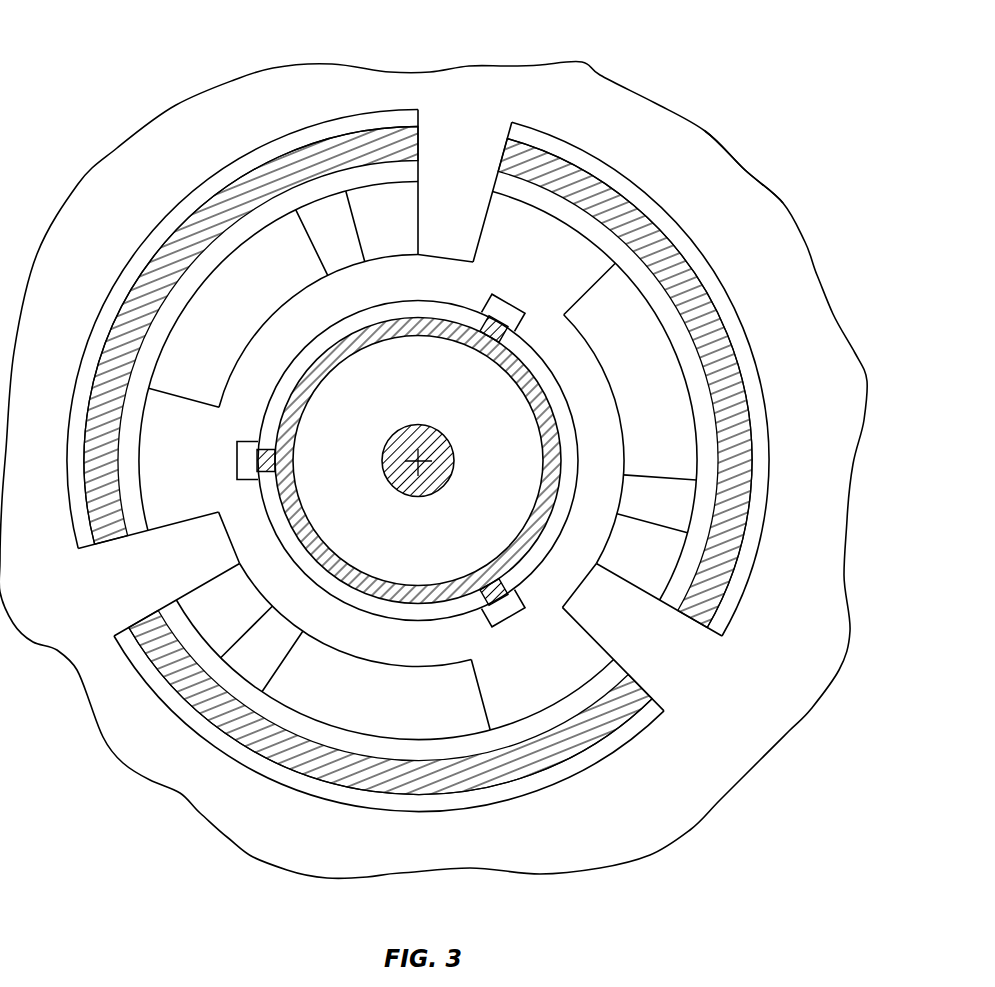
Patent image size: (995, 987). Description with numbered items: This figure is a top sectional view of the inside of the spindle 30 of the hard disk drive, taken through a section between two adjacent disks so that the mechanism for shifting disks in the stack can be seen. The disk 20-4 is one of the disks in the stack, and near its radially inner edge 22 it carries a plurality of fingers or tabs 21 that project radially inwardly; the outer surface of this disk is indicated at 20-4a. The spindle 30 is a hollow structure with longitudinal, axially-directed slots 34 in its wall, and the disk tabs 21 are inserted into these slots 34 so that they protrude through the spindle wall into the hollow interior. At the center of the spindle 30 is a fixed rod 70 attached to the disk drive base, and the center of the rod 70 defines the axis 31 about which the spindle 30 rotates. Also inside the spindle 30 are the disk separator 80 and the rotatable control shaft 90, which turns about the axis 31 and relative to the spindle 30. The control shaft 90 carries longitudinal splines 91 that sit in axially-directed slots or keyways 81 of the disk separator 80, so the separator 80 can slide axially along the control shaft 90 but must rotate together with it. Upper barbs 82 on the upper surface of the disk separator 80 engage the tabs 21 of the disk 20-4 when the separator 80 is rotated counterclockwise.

The disk 20-4 is at (585, 63).
The housing outer surface 20-4a is at (748, 170).
The radially inner edge 22 is at (773, 546).
The spindle 30 is at (745, 490).
The axially-directed slots 34 is at (424, 144).
The tabs 21 is at (460, 215).
The upper barbs 82 is at (583, 294).
The disk separator 80 is at (580, 653).
The keyways 81 is at (488, 297).
The splines 91 is at (517, 326).
The control shaft 90 is at (553, 463).
The fixed rod 70 is at (418, 426).
The axis 31 is at (414, 470).